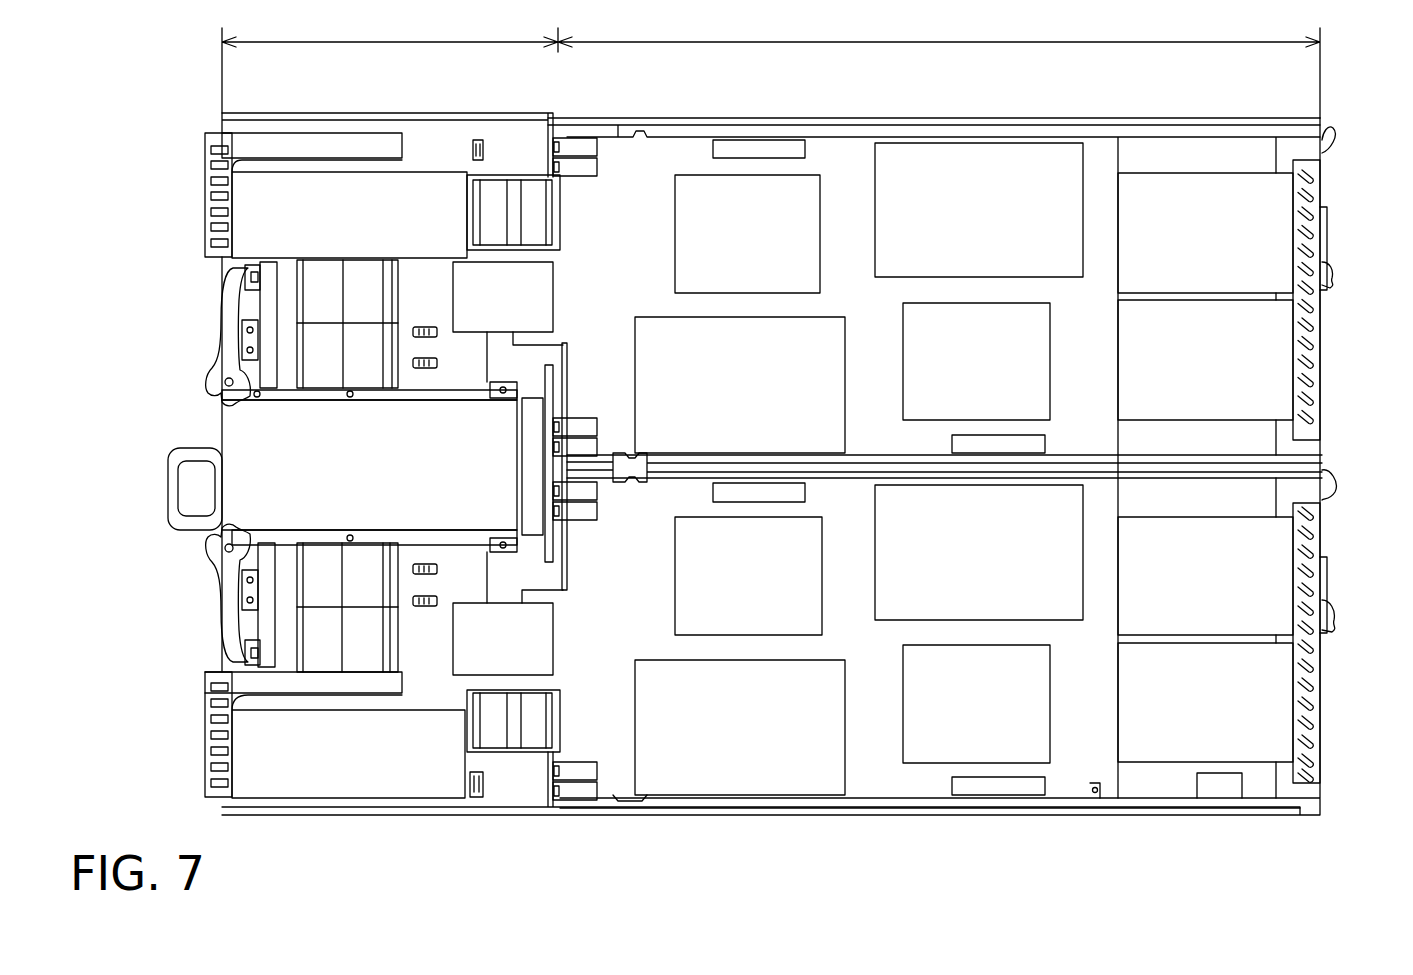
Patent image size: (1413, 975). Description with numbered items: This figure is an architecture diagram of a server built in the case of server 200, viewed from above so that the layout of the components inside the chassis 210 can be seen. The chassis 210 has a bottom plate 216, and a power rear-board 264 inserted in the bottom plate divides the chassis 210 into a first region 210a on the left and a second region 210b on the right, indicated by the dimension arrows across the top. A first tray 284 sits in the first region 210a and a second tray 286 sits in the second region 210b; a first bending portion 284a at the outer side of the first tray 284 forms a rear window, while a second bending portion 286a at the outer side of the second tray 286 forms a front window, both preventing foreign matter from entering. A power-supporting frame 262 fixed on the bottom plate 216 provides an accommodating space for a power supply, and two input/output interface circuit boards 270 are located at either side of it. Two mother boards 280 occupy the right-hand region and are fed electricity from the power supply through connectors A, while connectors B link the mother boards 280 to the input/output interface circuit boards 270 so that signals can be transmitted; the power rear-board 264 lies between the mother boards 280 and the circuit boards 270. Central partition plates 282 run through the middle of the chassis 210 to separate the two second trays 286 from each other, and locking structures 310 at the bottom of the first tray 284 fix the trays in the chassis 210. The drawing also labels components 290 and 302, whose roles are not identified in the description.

The case of server 200 is at (1372, 862).
The chassis 210 is at (1092, 120).
The first region 210a is at (390, 62).
The second region 210b is at (939, 65).
The bottom plate 216 is at (504, 239).
The power-supporting frame 262 is at (497, 417).
The power rear-board 264 is at (550, 368).
The input/output interface circuit boards 270 is at (417, 648).
The mother boards 280 is at (849, 152).
The central partition plates 282 is at (243, 393).
The first tray 284 is at (233, 268).
The first bending portion 284a is at (196, 758).
The second tray 286 is at (1322, 190).
The second bending portion 286a is at (1331, 709).
The storage module 290 is at (323, 648).
The heat sink 302 is at (1290, 571).
The locking structures 310 is at (220, 373).
The connectors A is at (600, 427).
The connectors B is at (521, 285).